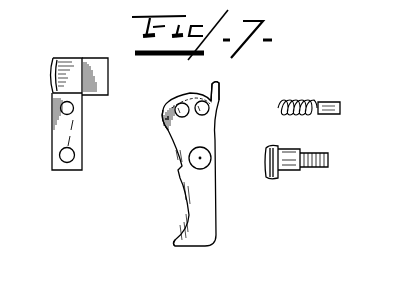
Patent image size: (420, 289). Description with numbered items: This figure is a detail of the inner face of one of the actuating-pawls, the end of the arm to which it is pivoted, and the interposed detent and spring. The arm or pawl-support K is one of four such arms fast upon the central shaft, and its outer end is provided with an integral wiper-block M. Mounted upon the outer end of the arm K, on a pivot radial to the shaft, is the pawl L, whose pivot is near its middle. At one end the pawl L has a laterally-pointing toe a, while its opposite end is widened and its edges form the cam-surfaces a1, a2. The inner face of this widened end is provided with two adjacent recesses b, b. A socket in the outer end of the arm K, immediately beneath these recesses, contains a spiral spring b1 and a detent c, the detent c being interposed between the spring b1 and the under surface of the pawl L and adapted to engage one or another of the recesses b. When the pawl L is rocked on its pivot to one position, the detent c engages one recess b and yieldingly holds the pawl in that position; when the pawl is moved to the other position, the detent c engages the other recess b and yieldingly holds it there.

The arm or pawl-support K is at (50, 114).
The wiper-block M is at (119, 44).
The pawl L is at (207, 208).
The toe a is at (183, 253).
The cam-surface a1 is at (170, 131).
The cam-surface a2 is at (217, 98).
The recess b is at (169, 103).
The spiral spring b1 is at (297, 96).
The detent c is at (340, 104).